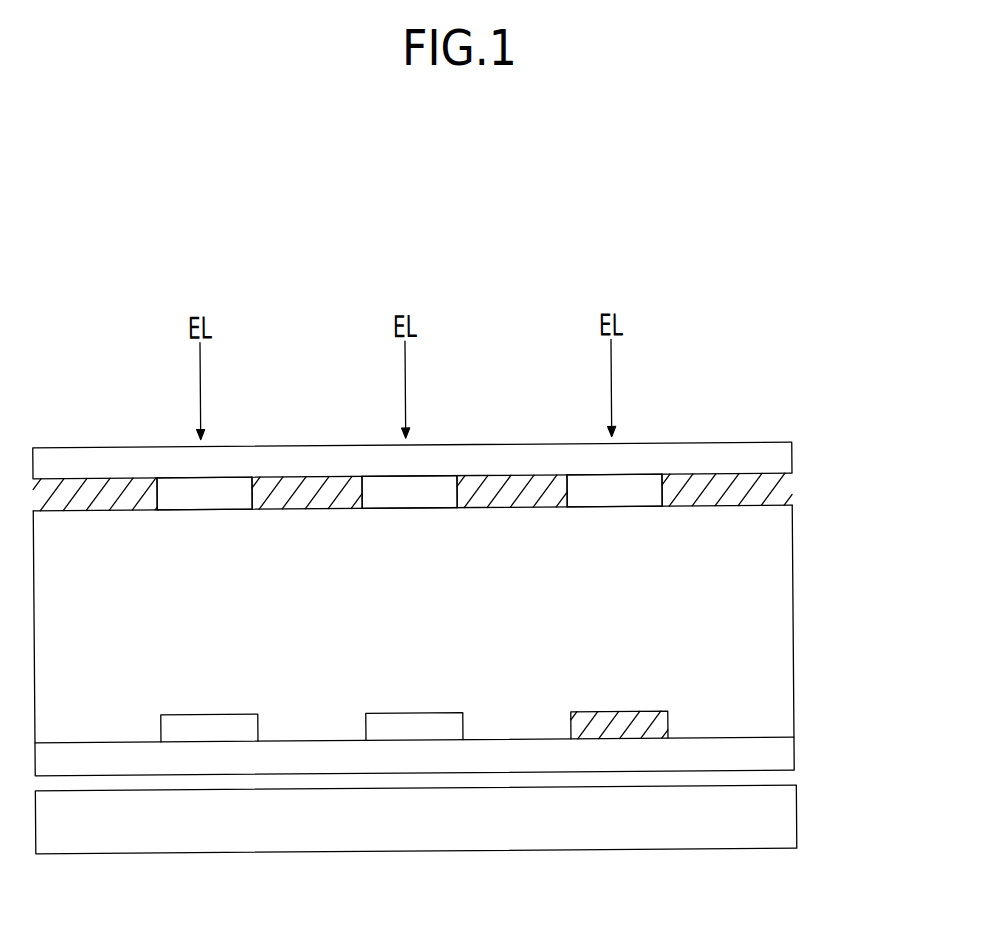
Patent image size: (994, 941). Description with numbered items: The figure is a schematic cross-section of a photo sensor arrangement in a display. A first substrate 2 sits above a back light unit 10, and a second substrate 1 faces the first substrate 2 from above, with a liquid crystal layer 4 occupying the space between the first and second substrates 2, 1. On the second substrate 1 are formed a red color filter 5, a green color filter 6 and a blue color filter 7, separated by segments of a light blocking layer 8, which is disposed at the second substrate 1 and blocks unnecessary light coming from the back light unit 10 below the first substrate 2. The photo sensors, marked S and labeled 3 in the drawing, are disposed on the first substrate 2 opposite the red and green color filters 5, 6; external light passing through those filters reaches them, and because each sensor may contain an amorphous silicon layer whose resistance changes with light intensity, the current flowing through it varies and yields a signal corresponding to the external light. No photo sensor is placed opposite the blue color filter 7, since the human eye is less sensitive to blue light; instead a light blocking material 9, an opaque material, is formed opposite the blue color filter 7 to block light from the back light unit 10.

The second substrate 1 is at (784, 456).
The first substrate 2 is at (785, 753).
The sensors 3 is at (393, 723).
The liquid crystal layer 4 is at (783, 620).
The red color filter 5 is at (235, 492).
The green color filter 6 is at (436, 490).
The blue color filter 7 is at (642, 488).
The light blocking layer 8 is at (784, 487).
The light blocking material 9 is at (667, 720).
The back light unit 10 is at (787, 815).